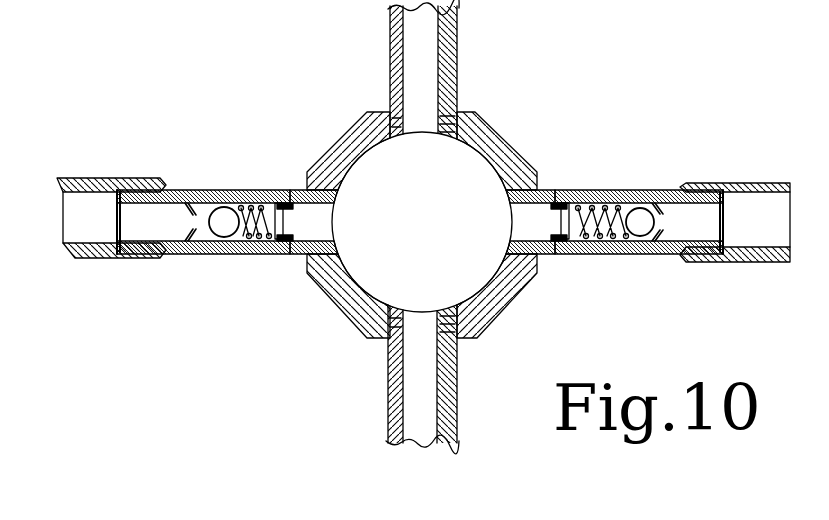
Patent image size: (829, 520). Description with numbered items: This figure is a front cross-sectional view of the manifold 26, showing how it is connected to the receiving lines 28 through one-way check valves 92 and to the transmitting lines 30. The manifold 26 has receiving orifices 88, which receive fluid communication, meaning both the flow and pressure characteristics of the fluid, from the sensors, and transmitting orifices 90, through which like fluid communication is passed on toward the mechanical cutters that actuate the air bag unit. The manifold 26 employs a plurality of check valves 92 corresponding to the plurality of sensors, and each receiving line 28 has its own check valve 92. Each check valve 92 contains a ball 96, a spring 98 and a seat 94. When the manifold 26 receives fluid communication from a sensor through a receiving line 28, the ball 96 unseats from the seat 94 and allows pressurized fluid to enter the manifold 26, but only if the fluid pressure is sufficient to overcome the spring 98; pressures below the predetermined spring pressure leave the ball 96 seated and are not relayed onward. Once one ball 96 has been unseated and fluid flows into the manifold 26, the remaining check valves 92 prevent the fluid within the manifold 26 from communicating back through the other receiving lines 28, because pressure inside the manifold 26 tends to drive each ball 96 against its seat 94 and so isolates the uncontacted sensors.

The manifold 26 is at (508, 148).
The receiving line 28 is at (93, 260).
The transmitting line 30 is at (458, 35).
The receiving orifice 88 is at (550, 165).
The transmitting orifice 90 is at (455, 113).
The one-way check valve 92 is at (207, 255).
The seat 94 is at (191, 206).
The ball 96 is at (214, 208).
The spring 98 is at (255, 258).